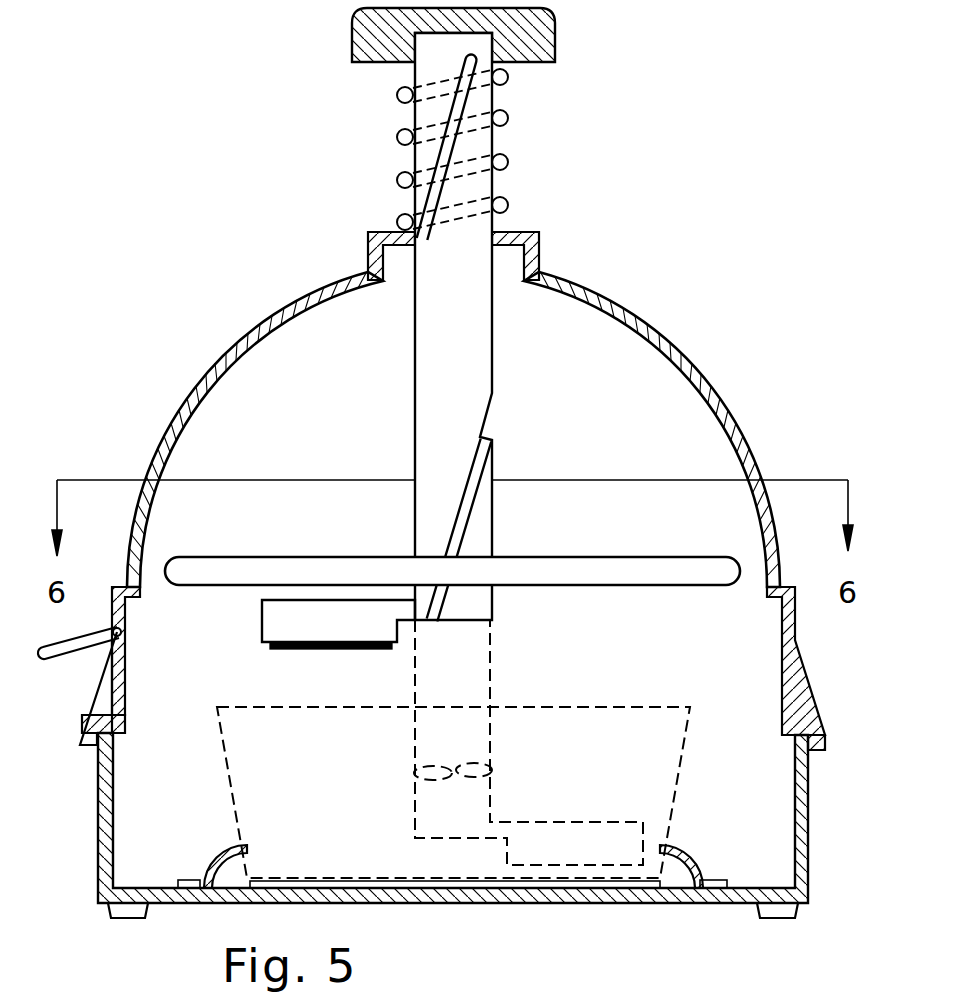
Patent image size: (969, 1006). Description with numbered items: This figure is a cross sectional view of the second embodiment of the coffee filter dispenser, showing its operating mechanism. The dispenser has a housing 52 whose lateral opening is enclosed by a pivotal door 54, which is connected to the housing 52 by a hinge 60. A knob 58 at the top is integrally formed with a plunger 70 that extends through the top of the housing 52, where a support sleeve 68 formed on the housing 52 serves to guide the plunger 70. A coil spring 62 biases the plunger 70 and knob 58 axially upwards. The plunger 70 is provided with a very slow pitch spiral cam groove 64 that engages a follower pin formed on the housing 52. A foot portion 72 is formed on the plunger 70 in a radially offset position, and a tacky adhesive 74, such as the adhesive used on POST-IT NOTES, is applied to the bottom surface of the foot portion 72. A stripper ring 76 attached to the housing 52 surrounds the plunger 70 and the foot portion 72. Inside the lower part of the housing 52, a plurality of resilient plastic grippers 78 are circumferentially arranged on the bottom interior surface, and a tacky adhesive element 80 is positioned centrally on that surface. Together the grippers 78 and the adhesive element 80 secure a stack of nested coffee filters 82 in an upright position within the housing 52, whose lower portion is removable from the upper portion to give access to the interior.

The housing 52 is at (722, 381).
The pivotal door 54 is at (64, 664).
The knob 58 is at (560, 40).
The hinge 60 is at (129, 640).
The coil spring 62 is at (484, 181).
The spiral cam groove 64 is at (476, 106).
The support sleeve 68 is at (548, 245).
The plunger 70 is at (468, 307).
The foot portion 72 is at (283, 634).
The tacky adhesive 74 is at (347, 657).
The stripper ring 76 is at (606, 552).
The resilient plastic grippers 78 is at (214, 845).
The tacky adhesive element 80 is at (504, 909).
The stack of nested coffee filters 82 is at (668, 736).